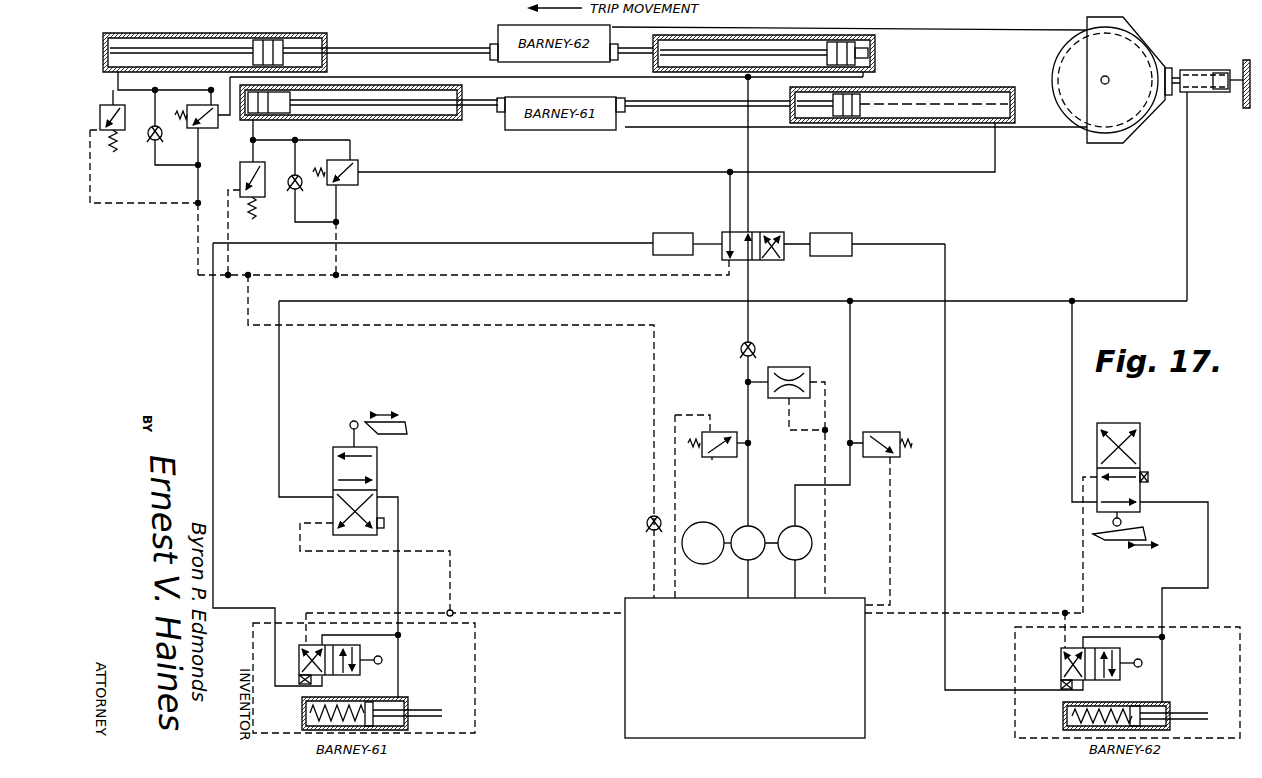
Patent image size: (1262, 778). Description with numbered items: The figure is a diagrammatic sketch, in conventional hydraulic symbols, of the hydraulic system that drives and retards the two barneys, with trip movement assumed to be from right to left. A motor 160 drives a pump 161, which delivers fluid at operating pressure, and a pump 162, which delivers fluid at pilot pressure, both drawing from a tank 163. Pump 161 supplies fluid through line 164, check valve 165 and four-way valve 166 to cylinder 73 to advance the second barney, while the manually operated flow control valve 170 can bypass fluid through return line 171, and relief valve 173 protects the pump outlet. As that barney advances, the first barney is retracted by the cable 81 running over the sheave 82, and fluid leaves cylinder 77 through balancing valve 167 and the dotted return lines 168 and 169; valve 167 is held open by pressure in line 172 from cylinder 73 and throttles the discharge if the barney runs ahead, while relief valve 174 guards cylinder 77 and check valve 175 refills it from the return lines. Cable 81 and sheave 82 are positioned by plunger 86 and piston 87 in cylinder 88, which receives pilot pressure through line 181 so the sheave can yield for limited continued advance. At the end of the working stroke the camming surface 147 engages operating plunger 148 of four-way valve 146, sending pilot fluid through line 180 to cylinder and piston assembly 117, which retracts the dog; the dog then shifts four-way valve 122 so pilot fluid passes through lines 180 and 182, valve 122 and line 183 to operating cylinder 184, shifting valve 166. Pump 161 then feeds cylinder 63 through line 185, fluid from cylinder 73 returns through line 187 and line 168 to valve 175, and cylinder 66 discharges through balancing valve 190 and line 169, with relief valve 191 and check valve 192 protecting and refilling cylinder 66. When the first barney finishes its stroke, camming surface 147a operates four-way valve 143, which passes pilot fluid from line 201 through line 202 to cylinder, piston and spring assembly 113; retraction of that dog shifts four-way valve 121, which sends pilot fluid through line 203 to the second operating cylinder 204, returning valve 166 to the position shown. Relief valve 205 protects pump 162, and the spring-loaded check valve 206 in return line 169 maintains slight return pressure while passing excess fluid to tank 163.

The retarding cylinder and piston assembly 77 is at (220, 33).
The barney advancing cylinder and piston assembly 73 is at (762, 35).
The cable 81 is at (962, 30).
The sheave 82 is at (1072, 48).
The plunger 86 is at (1170, 68).
The cylinder 88 is at (1196, 70).
The piston 87 is at (1218, 72).
The line 172 is at (433, 78).
The retarding cylinder and piston assembly 66 is at (450, 123).
The hydraulic cylinder and piston assembly 63 is at (933, 124).
The line 185 is at (903, 174).
The line 181 is at (1187, 195).
The four-way valve 166 is at (765, 232).
The operating cylinder 184 is at (832, 233).
The second operating cylinder 204 is at (677, 233).
The line 187 is at (545, 276).
The return line 168 is at (196, 246).
The line 203 is at (213, 398).
The line 201 is at (700, 304).
The return line 169 is at (533, 328).
The check valve 165 is at (755, 347).
The flow control valve 170 is at (788, 367).
The line 164 is at (746, 432).
The pressure relief valve 173 is at (712, 458).
The return line 171 is at (824, 457).
The pressure relief valve 205 is at (876, 432).
The line 183 is at (945, 506).
The four-way valve 146 is at (1141, 448).
The operating plunger 148 is at (1122, 516).
The camming surface 147 is at (1117, 542).
The line 180 is at (1208, 552).
The line 182 is at (1116, 637).
The four-way valve 122 is at (1110, 682).
The cylinder and piston assembly 117 is at (1063, 716).
The camming surface 147a is at (402, 433).
The four-way valve 143 is at (378, 465).
The line 202 is at (398, 575).
The four-way valve 121 is at (355, 677).
The cylinder, piston and spring assembly 113 is at (302, 714).
The check valve 206 is at (648, 517).
The motor 160 is at (714, 522).
The pump 161 is at (760, 526).
The pump 162 is at (812, 532).
The tank 163 is at (866, 664).
The check valve 192 is at (298, 190).
The balancing valve 190 is at (358, 180).
The pressure relief valve 191 is at (266, 190).
The pressure relief valve 174 is at (128, 138).
The check valve 175 is at (162, 140).
The balancing valve 167 is at (205, 133).